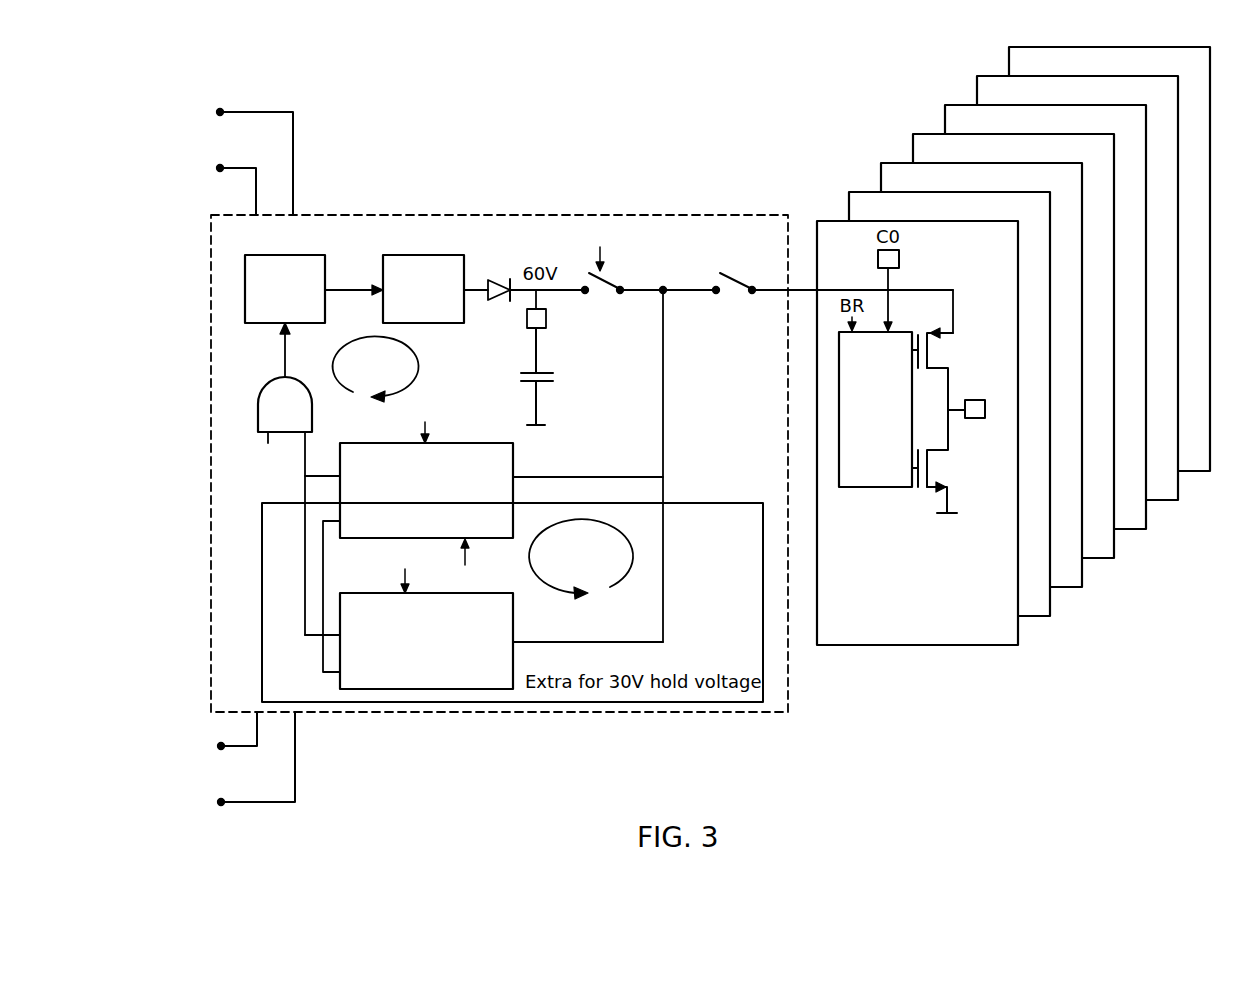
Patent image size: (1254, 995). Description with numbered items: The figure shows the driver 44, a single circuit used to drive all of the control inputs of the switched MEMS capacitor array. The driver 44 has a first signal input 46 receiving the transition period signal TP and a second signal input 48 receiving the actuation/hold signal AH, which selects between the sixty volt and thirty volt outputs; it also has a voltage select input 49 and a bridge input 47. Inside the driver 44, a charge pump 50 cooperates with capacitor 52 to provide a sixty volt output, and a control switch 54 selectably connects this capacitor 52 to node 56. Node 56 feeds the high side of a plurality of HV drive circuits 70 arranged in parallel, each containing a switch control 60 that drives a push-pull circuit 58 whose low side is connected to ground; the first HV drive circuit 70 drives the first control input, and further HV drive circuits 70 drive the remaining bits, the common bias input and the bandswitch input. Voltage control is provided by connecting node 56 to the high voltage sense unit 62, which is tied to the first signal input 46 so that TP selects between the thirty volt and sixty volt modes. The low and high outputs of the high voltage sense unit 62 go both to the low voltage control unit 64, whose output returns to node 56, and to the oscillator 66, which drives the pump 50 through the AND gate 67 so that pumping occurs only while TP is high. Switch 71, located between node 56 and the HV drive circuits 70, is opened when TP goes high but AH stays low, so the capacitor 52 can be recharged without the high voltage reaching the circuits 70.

The driver 44 is at (346, 130).
The first signal input 46 is at (220, 112).
The second signal input 48 is at (220, 168).
The voltage select input 49 is at (221, 746).
The bridge input 47 is at (221, 802).
The oscillator 66 is at (245, 292).
The AND gate 67 is at (258, 415).
The charge pump 50 is at (424, 255).
The capacitor 52 is at (548, 385).
The control switch 54 is at (615, 278).
The node 56 is at (668, 285).
The switch 71 is at (746, 300).
The high voltage sense unit 62 is at (513, 462).
The low voltage control unit 64 is at (420, 690).
The HV drive circuit 70 is at (1006, 72).
The switch control 60 is at (865, 487).
The push-pull circuit 58 is at (930, 504).